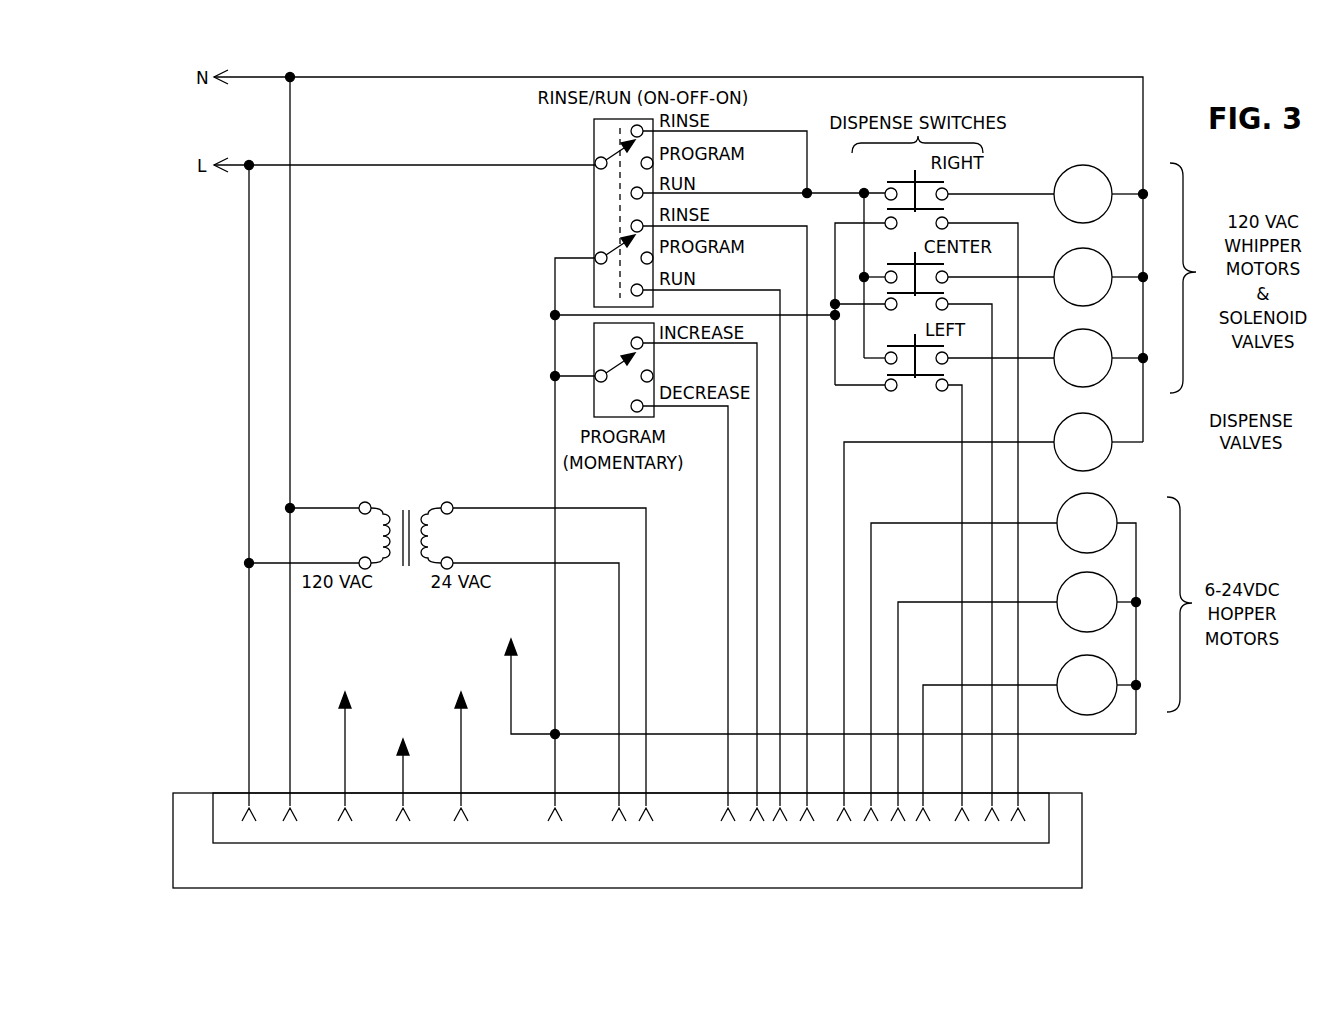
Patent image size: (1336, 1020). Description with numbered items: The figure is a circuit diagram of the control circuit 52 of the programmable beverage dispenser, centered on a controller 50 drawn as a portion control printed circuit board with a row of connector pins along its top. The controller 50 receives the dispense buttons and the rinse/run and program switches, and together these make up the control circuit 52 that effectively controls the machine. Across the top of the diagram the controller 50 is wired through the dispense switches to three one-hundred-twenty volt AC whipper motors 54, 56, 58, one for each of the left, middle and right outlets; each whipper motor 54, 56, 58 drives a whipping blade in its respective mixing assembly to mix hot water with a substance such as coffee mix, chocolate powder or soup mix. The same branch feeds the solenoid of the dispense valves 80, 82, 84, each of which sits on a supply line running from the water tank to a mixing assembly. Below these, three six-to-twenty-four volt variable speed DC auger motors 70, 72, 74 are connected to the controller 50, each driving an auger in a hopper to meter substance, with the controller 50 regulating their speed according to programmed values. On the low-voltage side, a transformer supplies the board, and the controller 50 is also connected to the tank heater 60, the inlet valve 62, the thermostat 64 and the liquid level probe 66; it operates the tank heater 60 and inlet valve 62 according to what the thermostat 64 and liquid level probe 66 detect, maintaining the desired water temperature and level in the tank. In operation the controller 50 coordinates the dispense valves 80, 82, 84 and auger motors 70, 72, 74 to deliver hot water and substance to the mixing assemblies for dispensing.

The controller 50 is at (1082, 862).
The control circuit 52 is at (232, 623).
The whipper motor 54 is at (1063, 334).
The whipper motor 56 is at (1060, 251).
The whipper motor 58 is at (1059, 176).
The tank heater 60 is at (534, 648).
The inlet valve 62 is at (439, 731).
The thermostat 64 is at (306, 679).
The liquid level probe 66 is at (485, 698).
The auger motor 70 is at (1064, 661).
The auger motor 72 is at (1063, 578).
The auger motor 74 is at (1063, 500).
The dispense valve 80 is at (1024, 609).
The dispense valve 82 is at (1024, 609).
The dispense valve 84 is at (1100, 459).